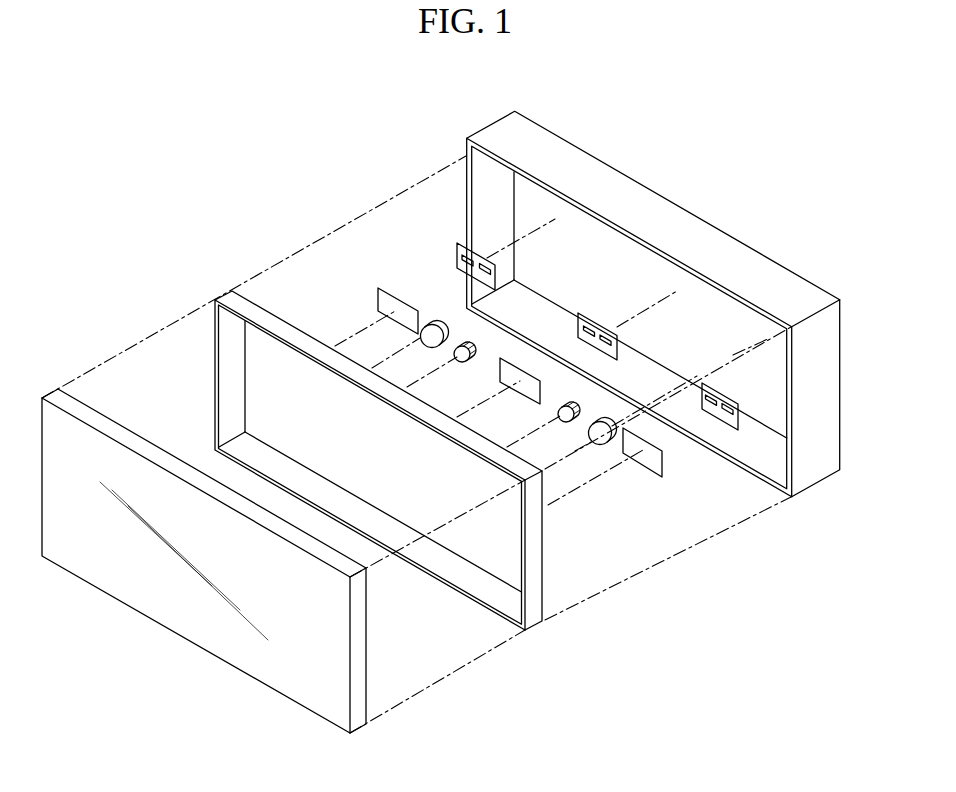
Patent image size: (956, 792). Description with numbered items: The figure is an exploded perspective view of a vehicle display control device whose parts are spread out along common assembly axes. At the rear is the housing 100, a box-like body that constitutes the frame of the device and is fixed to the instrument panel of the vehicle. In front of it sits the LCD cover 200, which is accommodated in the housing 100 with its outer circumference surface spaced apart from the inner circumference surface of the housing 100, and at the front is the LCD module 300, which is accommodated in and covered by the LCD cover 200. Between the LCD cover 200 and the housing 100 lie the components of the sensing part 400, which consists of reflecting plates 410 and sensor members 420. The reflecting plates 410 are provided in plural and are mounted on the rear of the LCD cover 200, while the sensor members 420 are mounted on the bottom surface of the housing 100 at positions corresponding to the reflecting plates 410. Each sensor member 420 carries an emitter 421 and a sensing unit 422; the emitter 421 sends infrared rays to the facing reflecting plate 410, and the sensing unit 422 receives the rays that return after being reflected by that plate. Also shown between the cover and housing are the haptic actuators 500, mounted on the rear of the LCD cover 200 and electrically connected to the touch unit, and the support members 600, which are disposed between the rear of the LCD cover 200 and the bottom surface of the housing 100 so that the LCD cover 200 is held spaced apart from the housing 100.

The housing 100 is at (728, 208).
The LCD cover 200 is at (219, 291).
The LCD module 300 is at (186, 648).
The sensing part 400 is at (681, 419).
The reflecting plate 410 is at (662, 467).
The sensor member 420 is at (681, 398).
The emitter 421 is at (717, 393).
The sensing unit 422 is at (745, 404).
The haptic actuator 500 is at (432, 302).
The support member 600 is at (590, 390).